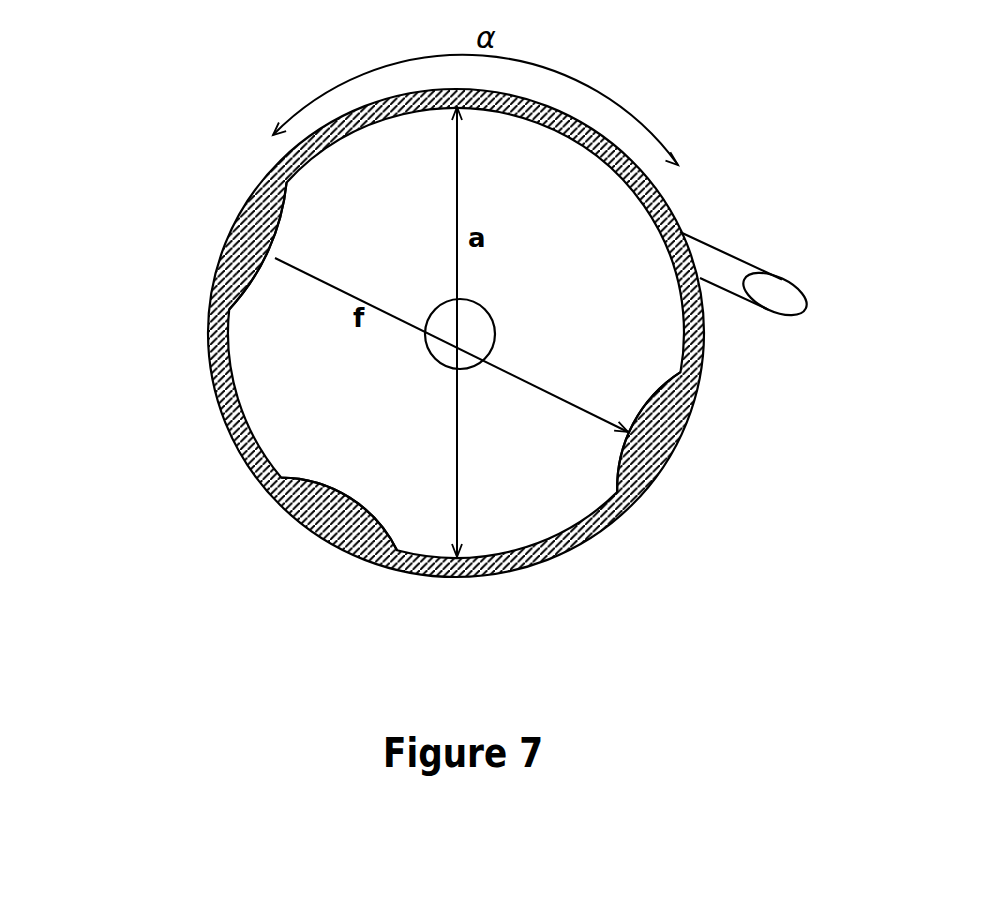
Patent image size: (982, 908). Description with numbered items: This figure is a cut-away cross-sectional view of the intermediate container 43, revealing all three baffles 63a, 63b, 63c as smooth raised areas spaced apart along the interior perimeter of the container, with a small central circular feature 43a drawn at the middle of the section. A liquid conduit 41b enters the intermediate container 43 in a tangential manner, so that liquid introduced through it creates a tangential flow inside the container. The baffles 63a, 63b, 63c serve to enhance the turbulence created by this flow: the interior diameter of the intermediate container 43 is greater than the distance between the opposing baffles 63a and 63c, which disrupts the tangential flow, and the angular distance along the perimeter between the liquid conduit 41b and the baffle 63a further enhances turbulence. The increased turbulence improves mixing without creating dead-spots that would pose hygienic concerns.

The intermediate container 43 is at (212, 398).
The central hole 43a is at (478, 307).
The baffle 63a is at (247, 260).
The baffle 63b is at (312, 537).
The baffle 63c is at (660, 435).
The liquid conduit 41b is at (730, 255).